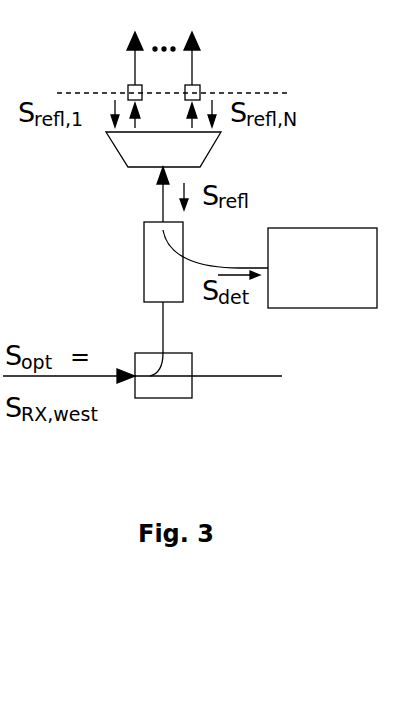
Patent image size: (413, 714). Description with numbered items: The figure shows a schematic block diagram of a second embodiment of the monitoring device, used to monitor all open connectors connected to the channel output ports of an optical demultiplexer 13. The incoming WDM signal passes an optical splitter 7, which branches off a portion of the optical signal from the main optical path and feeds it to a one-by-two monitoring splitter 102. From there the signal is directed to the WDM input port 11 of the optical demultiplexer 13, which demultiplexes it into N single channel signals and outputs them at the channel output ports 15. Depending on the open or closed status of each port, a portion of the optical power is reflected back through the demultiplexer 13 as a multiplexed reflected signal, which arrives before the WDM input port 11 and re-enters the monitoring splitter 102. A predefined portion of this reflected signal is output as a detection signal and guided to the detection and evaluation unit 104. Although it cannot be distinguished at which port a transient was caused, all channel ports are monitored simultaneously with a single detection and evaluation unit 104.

The channel output ports 15 is at (227, 70).
The optical demultiplexer 13 is at (190, 147).
The WDM input port 11 is at (160, 185).
The 1×2 monitoring splitter 102 is at (155, 263).
The detection and evaluation unit 104 is at (338, 300).
The optical splitter 7 is at (177, 392).